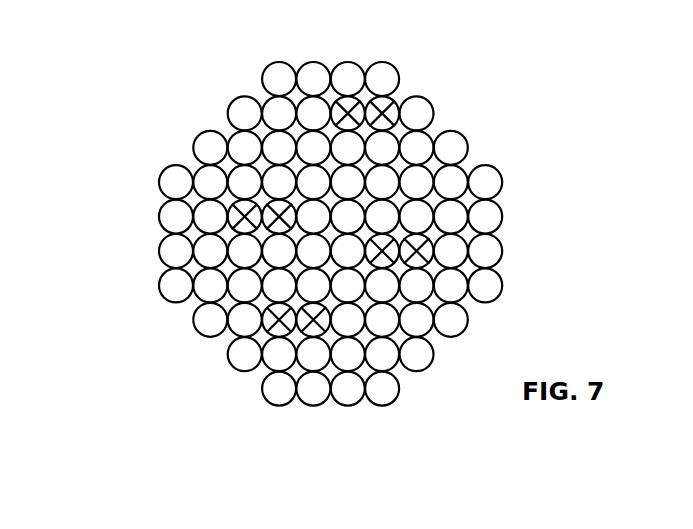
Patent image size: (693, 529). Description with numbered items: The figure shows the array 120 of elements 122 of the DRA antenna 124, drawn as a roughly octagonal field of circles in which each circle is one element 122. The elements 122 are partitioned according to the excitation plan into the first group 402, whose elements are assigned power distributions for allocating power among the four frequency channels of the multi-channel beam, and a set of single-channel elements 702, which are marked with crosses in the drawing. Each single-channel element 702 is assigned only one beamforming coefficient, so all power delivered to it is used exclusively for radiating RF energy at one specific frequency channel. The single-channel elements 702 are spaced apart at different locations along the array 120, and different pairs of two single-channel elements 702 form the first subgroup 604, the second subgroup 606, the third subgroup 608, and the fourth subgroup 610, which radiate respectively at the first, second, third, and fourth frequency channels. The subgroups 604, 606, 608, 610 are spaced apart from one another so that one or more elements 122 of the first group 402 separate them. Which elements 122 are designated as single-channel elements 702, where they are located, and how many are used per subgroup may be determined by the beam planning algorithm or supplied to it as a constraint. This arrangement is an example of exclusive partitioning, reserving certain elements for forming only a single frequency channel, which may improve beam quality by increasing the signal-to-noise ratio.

The array 120 is at (385, 77).
The element 122 is at (310, 250).
The DRA antenna 124 is at (477, 68).
The first group 402 is at (400, 374).
The first subgroup 604 is at (333, 97).
The second subgroup 606 is at (228, 203).
The third subgroup 608 is at (265, 337).
The fourth subgroup 610 is at (433, 232).
The single-channel element 702 is at (347, 105).